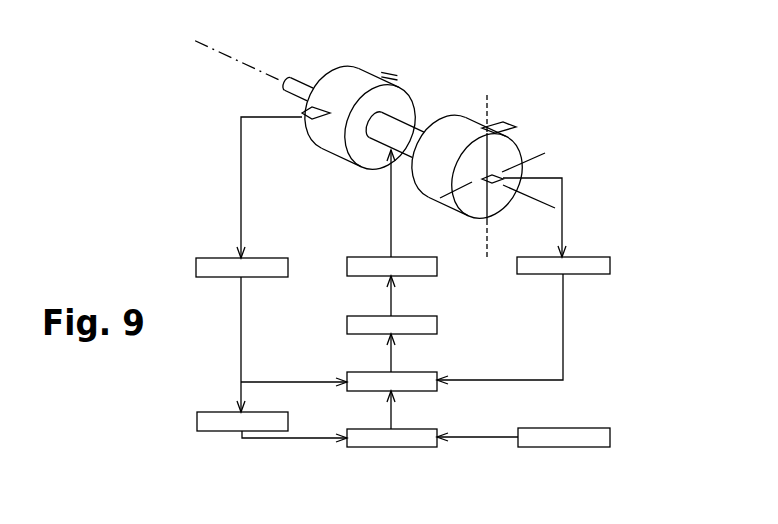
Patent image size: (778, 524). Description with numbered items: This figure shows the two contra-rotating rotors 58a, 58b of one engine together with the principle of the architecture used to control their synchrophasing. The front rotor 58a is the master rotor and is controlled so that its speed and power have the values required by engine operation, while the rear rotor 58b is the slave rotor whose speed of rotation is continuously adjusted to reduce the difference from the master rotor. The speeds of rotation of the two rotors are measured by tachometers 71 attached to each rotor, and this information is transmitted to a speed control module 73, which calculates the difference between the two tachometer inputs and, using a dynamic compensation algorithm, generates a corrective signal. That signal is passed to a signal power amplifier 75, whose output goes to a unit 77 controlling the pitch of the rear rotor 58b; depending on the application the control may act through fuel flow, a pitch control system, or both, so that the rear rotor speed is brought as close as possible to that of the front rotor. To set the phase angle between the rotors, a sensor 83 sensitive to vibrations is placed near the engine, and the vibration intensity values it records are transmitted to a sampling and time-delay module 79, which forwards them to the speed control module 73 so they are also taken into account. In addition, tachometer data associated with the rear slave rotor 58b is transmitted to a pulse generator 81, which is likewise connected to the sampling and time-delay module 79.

The front rotor 58a is at (467, 125).
The rear rotor 58b is at (388, 90).
The tachometer 71 is at (313, 108).
The speed control module 73 is at (360, 378).
The signal power amplifier 75 is at (437, 320).
The unit controlling the pitch of the rear rotor 77 is at (360, 265).
The sampling and time-delay module 79 is at (369, 444).
The pulse generator 81 is at (215, 424).
The sensor sensitive to vibrations 83 is at (590, 435).